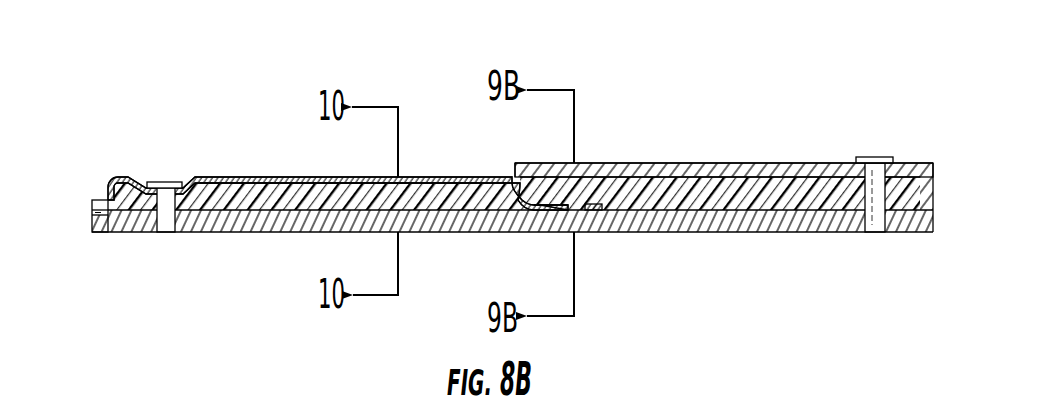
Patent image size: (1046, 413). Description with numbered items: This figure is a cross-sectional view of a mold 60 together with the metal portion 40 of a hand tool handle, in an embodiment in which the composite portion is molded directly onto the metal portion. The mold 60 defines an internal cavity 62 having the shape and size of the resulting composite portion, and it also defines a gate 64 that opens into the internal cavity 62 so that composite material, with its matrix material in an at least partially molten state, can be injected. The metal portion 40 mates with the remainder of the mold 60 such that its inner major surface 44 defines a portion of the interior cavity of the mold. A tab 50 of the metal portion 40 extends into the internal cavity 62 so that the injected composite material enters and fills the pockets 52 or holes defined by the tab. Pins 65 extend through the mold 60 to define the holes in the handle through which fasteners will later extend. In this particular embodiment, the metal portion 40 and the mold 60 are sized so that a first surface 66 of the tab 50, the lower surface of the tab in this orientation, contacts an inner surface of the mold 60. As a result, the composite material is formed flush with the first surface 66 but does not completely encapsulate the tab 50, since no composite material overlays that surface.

The metal portion 40 is at (109, 187).
The inner major surface 44 is at (286, 186).
The tab 50 is at (553, 212).
The pockets 52 is at (582, 212).
The mold 60 is at (723, 163).
The internal cavity 62 is at (813, 185).
The gate 64 is at (92, 222).
The pins 65 is at (172, 182).
The first surface 66 is at (537, 212).